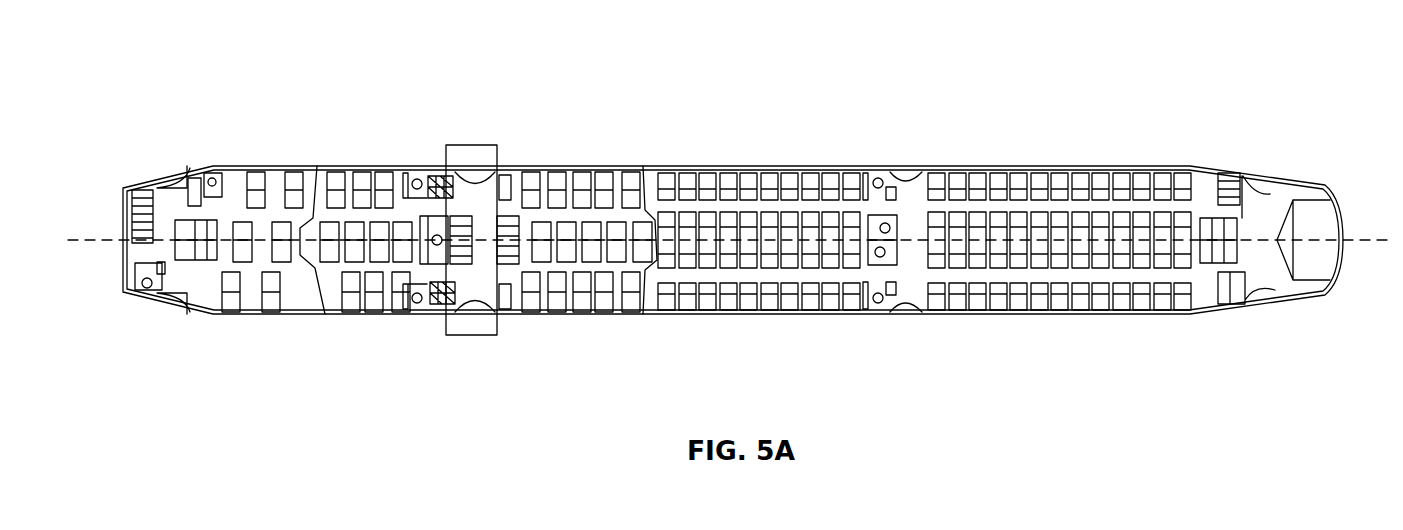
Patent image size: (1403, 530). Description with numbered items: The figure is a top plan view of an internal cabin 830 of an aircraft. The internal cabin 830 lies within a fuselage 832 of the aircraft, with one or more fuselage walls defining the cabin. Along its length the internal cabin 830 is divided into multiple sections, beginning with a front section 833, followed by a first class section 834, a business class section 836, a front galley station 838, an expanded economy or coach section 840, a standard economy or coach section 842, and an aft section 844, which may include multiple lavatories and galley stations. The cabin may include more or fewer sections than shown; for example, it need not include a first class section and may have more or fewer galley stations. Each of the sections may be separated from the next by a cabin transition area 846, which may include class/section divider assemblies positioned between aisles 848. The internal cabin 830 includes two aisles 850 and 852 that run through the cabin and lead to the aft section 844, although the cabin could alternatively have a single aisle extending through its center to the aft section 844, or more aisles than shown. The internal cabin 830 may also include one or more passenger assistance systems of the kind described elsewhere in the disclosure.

The internal cabin 830 is at (262, 70).
The fuselage 832 is at (594, 127).
The front section 833 is at (180, 327).
The first class section 834 is at (275, 313).
The business class section 836 is at (352, 166).
The front galley station 838 is at (472, 330).
The expanded economy or coach section 840 is at (572, 313).
The standard economy or coach section 842 is at (712, 166).
The aft section 844 is at (1270, 197).
The cabin transition area 846 is at (200, 166).
The aisles 848 is at (418, 166).
The aisle 850 is at (1062, 208).
The aisle 852 is at (1082, 275).